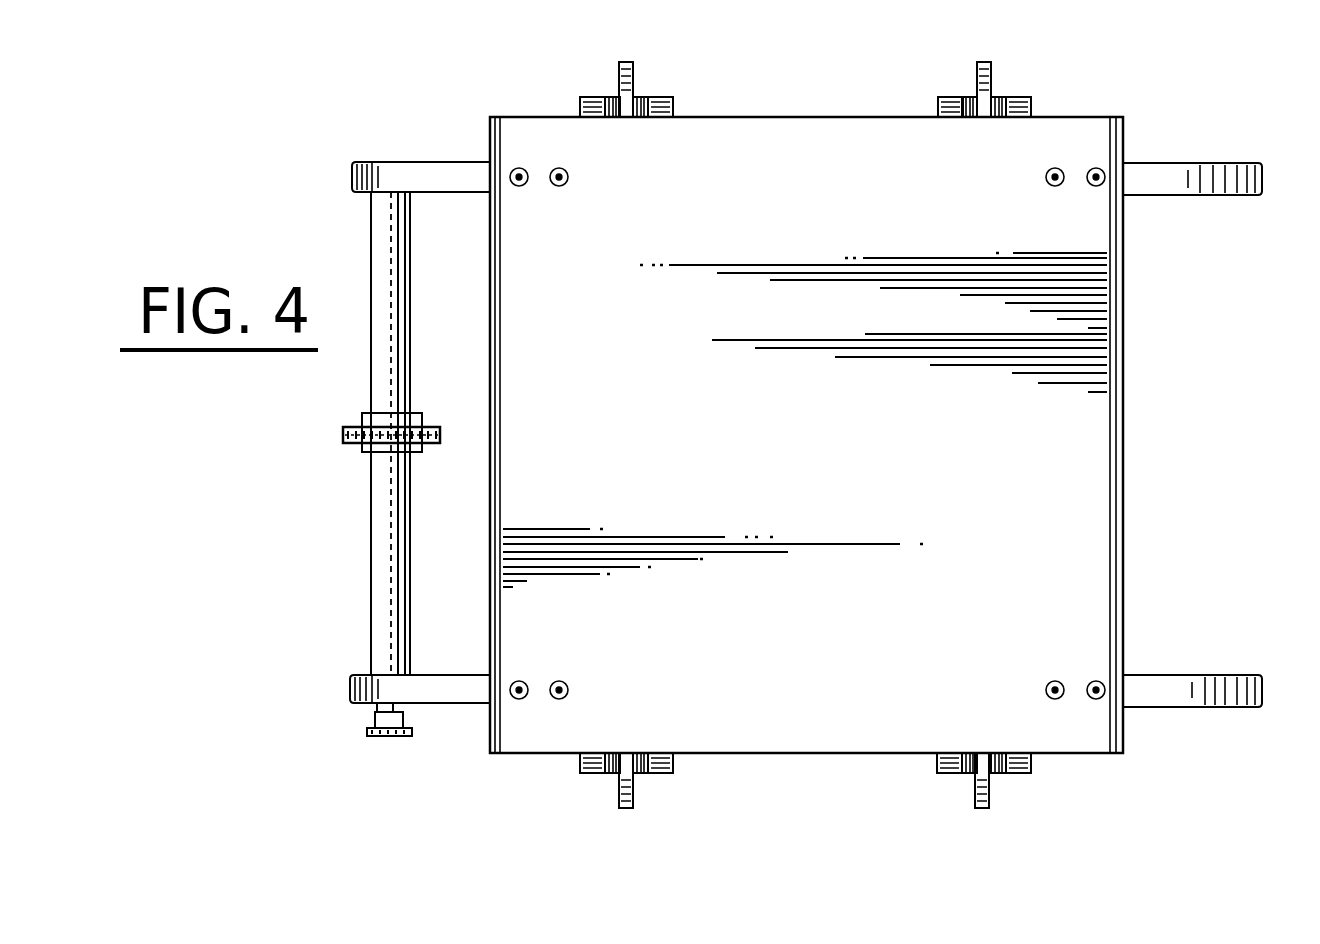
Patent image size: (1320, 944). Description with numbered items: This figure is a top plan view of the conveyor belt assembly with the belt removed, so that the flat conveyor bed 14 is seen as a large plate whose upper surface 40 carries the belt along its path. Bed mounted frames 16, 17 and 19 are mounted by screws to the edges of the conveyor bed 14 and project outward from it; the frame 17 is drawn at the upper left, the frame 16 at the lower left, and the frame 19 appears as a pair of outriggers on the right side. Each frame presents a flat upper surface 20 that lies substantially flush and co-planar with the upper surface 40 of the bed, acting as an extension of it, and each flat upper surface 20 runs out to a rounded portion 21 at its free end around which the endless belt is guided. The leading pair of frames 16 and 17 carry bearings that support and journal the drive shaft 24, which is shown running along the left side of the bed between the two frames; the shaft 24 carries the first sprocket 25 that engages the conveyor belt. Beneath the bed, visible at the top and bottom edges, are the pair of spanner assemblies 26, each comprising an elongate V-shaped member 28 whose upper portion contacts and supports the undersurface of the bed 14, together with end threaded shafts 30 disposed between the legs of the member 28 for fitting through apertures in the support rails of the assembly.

The conveyor bed 14 is at (764, 387).
The bed mounted frame 16 is at (460, 707).
The bed mounted frame 17 is at (455, 160).
The bed mounted frame 19 is at (1222, 198).
The flat upper surface 20 is at (370, 162).
The rounded portion 21 is at (352, 174).
The drive shaft 24 is at (383, 572).
The first sprocket 25 is at (343, 437).
The spanner assembly 26 is at (666, 94).
The V-shaped member 28 is at (582, 99).
The threaded shaft 30 is at (624, 64).
The upper surface 40 is at (1110, 363).